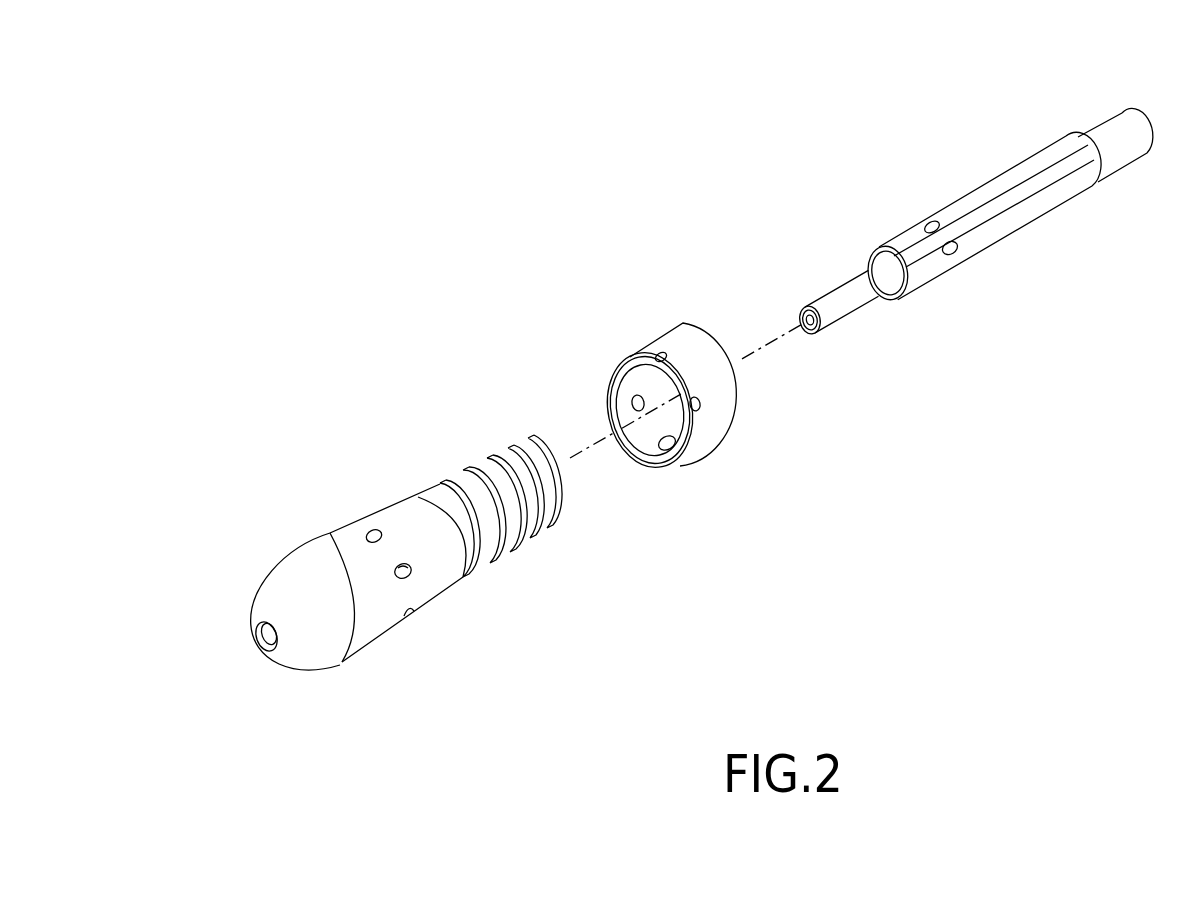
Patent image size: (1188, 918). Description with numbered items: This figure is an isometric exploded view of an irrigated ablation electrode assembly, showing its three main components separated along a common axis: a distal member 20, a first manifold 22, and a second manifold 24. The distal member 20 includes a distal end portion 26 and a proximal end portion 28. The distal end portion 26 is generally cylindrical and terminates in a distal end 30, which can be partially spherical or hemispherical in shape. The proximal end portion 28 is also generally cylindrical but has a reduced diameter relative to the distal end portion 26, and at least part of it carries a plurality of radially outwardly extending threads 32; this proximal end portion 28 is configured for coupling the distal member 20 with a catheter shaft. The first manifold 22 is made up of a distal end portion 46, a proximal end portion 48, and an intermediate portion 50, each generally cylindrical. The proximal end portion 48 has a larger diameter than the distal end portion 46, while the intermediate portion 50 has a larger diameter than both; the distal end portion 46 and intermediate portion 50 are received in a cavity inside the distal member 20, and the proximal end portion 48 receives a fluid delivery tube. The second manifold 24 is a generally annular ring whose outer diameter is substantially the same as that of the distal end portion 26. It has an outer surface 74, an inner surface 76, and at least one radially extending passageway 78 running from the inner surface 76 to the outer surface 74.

The distal member 20 is at (387, 586).
The first manifold 22 is at (970, 222).
The second manifold 24 is at (702, 411).
The distal end portion 26 is at (304, 639).
The proximal end portion 28 is at (463, 544).
The distal end 30 is at (250, 599).
The threads 32 is at (437, 485).
The distal end portion 46 is at (862, 254).
The proximal end portion 48 is at (1124, 96).
The intermediate portion 50 is at (1057, 121).
The outer surface 74 is at (738, 402).
The inner surface 76 is at (646, 437).
The radially extending passageway 78 is at (658, 354).